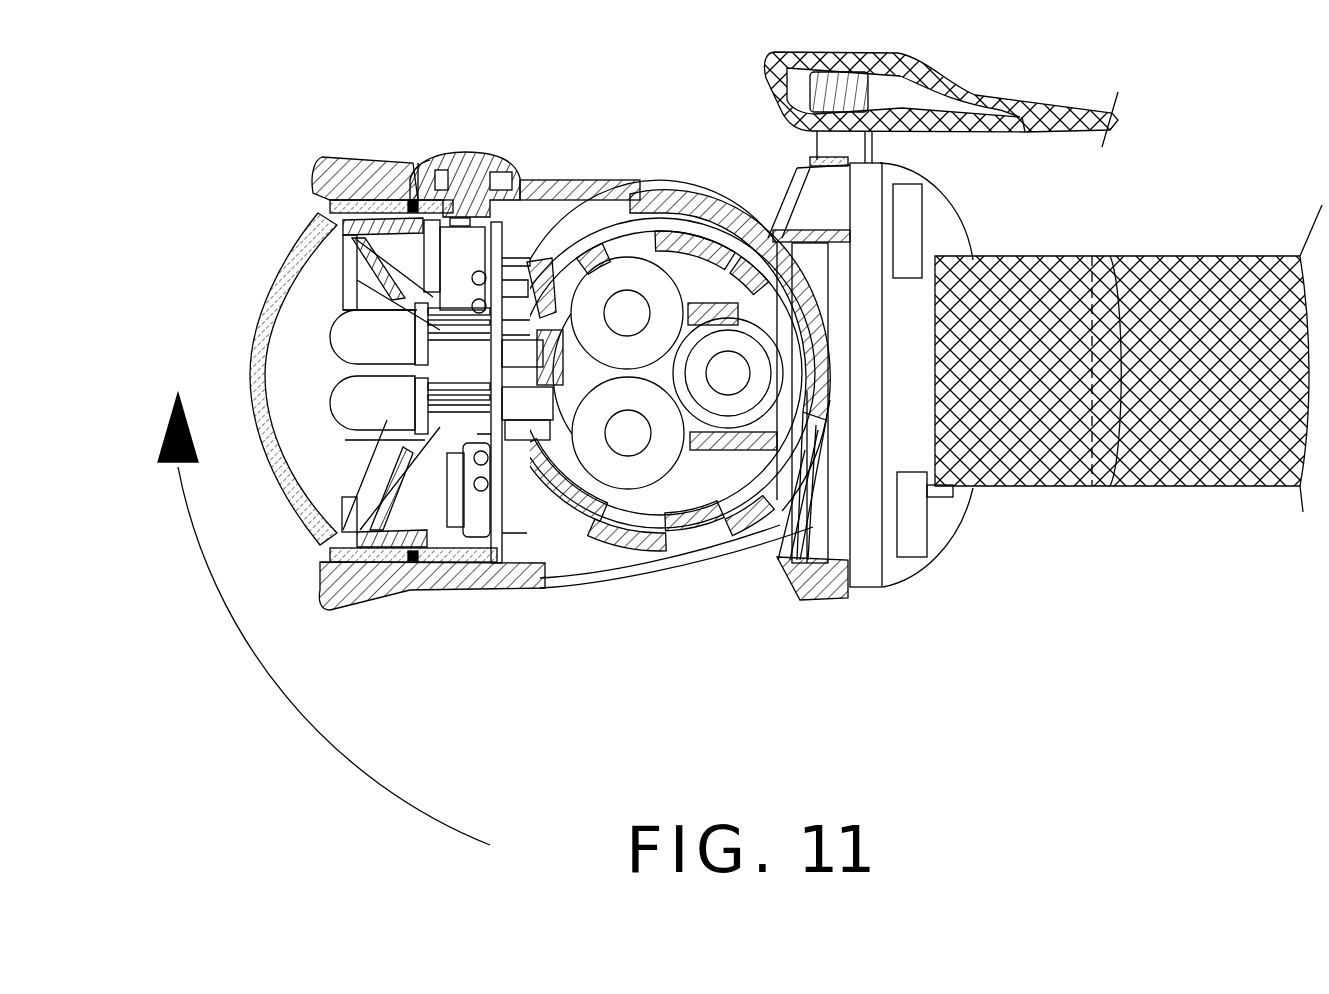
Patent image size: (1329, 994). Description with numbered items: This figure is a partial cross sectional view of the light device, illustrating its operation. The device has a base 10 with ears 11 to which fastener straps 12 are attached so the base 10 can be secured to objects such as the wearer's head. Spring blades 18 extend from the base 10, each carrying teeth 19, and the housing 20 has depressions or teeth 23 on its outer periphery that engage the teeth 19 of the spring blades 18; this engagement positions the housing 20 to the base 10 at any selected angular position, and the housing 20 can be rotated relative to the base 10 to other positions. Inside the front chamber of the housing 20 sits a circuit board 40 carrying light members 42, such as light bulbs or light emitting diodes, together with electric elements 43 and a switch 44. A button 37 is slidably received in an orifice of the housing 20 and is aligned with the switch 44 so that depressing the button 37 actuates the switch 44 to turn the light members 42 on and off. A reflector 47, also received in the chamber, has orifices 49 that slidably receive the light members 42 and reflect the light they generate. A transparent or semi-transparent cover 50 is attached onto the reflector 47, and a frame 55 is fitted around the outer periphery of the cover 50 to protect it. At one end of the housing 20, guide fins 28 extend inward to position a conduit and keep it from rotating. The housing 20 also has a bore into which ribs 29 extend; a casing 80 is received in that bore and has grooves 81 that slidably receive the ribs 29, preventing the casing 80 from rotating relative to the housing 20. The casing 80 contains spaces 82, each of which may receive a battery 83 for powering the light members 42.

The base 10 is at (823, 587).
The ear 11 is at (853, 142).
The fastener strap 12 is at (975, 92).
The spring blade 18 is at (830, 567).
The tooth 19 is at (858, 587).
The housing 20 is at (583, 178).
The depression or tooth 23 is at (760, 530).
The guide fin 28 is at (653, 213).
The rib 29 is at (548, 420).
The button 37 is at (462, 152).
The circuit board 40 is at (497, 247).
The light member 42 is at (338, 330).
The electric element 43 is at (530, 437).
The switch 44 is at (425, 170).
The reflector 47 is at (340, 247).
The orifice 49 is at (385, 413).
The cover 50 is at (257, 372).
The frame 55 is at (320, 190).
The casing 80 is at (683, 495).
The groove 81 is at (710, 228).
The space 82 is at (630, 530).
The battery 83 is at (603, 468).